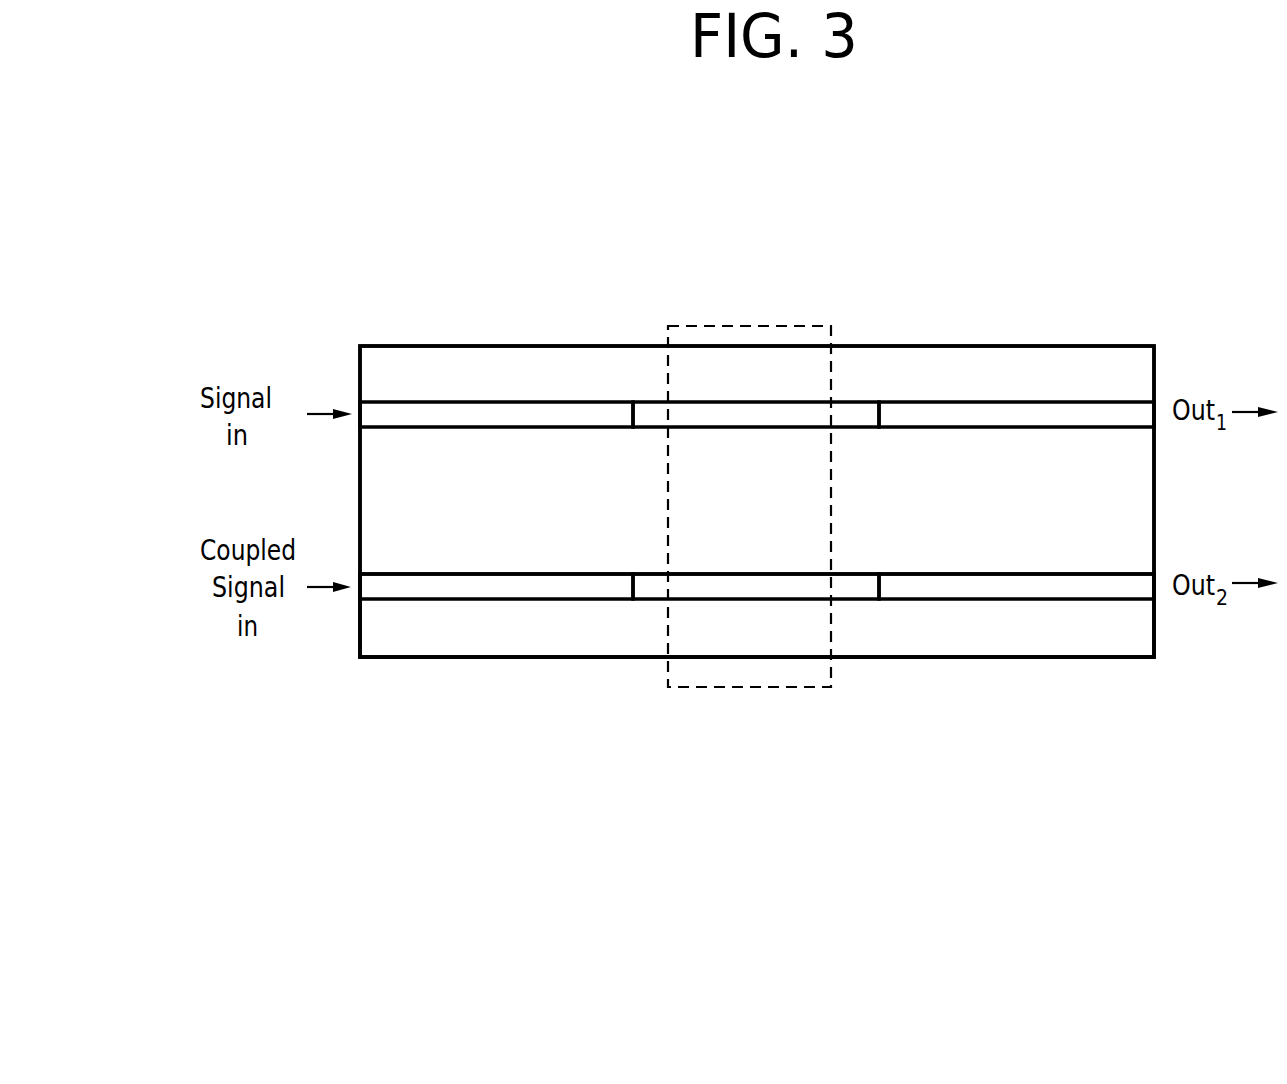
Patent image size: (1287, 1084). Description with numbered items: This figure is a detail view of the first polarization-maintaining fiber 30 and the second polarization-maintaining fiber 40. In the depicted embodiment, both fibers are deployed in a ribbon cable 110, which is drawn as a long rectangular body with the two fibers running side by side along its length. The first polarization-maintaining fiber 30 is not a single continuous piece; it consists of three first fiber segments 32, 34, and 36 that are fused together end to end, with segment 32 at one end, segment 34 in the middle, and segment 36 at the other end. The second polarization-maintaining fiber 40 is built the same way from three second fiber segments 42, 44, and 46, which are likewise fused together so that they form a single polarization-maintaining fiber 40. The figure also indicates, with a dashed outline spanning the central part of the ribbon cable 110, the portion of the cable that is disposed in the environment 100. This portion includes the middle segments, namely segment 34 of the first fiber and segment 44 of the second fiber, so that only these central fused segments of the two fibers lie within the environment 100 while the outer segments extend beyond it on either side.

The first polarization-maintaining fiber 30 is at (757, 192).
The first fiber segment 32 is at (522, 412).
The first fiber segment 34 is at (733, 415).
The first fiber segment 36 is at (990, 408).
The second polarization-maintaining fiber 40 is at (731, 792).
The second fiber segment 42 is at (546, 587).
The second fiber segment 44 is at (728, 587).
The second fiber segment 46 is at (938, 584).
The environment 100 is at (832, 543).
The ribbon cable 110 is at (1112, 178).